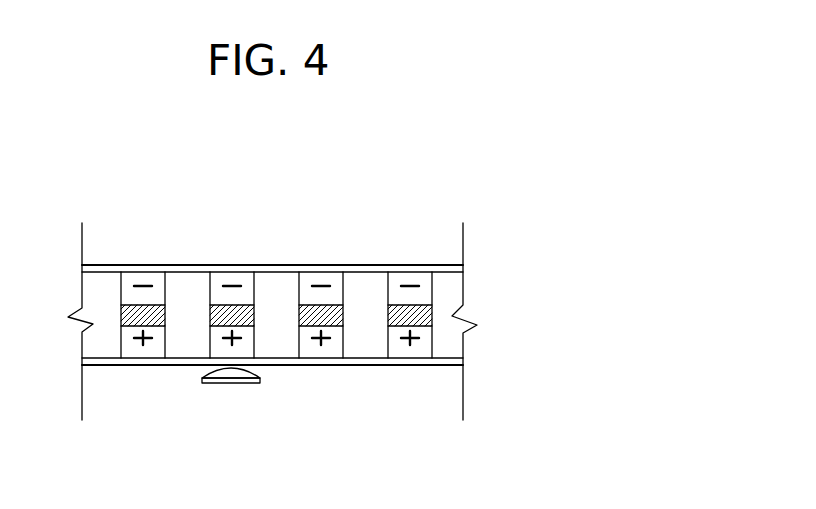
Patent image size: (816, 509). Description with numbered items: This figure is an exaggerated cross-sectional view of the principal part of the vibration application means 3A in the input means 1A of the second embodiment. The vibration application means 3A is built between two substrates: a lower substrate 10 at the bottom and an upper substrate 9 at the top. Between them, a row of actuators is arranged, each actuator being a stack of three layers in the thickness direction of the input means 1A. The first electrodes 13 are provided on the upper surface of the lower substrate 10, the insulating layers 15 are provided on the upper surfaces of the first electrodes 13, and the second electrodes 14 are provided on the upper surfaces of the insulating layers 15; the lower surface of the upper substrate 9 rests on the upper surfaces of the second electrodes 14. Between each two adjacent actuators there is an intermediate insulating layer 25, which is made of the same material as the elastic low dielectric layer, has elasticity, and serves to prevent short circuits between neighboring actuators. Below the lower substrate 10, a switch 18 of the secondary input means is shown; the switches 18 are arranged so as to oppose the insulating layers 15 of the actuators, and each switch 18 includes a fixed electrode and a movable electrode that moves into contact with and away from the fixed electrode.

The input means 1A is at (199, 245).
The vibration application means 3A is at (373, 315).
The upper substrate 9 is at (450, 268).
The lower substrate 10 is at (445, 362).
The first electrode 13 is at (427, 342).
The second electrode 14 is at (427, 290).
The insulating layer 15 is at (436, 309).
The switch 18 is at (230, 385).
The intermediate insulating layer 25 is at (362, 347).